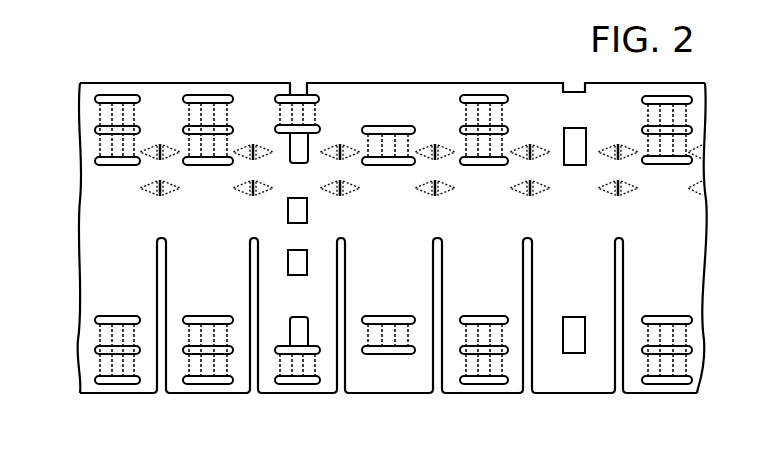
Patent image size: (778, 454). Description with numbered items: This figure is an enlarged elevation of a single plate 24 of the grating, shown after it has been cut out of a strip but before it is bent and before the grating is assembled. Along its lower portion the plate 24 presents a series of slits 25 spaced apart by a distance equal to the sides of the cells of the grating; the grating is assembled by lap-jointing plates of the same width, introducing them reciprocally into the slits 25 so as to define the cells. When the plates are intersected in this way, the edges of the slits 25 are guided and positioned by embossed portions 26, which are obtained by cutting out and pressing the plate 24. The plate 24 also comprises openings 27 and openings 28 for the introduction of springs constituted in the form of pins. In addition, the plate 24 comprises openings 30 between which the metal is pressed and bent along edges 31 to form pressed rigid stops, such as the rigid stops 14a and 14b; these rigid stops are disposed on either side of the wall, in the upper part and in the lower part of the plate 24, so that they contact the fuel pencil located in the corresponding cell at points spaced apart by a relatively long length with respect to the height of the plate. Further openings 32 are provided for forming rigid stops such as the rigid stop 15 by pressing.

The rigid stop 14a is at (685, 248).
The rigid stop 14b is at (665, 153).
The rigid stop 15 is at (370, 101).
The plate 24 is at (88, 92).
The slits 25 is at (341, 394).
The embossed portions 26 is at (167, 188).
The openings 27 is at (298, 96).
The openings 28 is at (298, 263).
The openings 30 is at (583, 240).
The edges 31 is at (594, 240).
The openings 32 is at (380, 130).